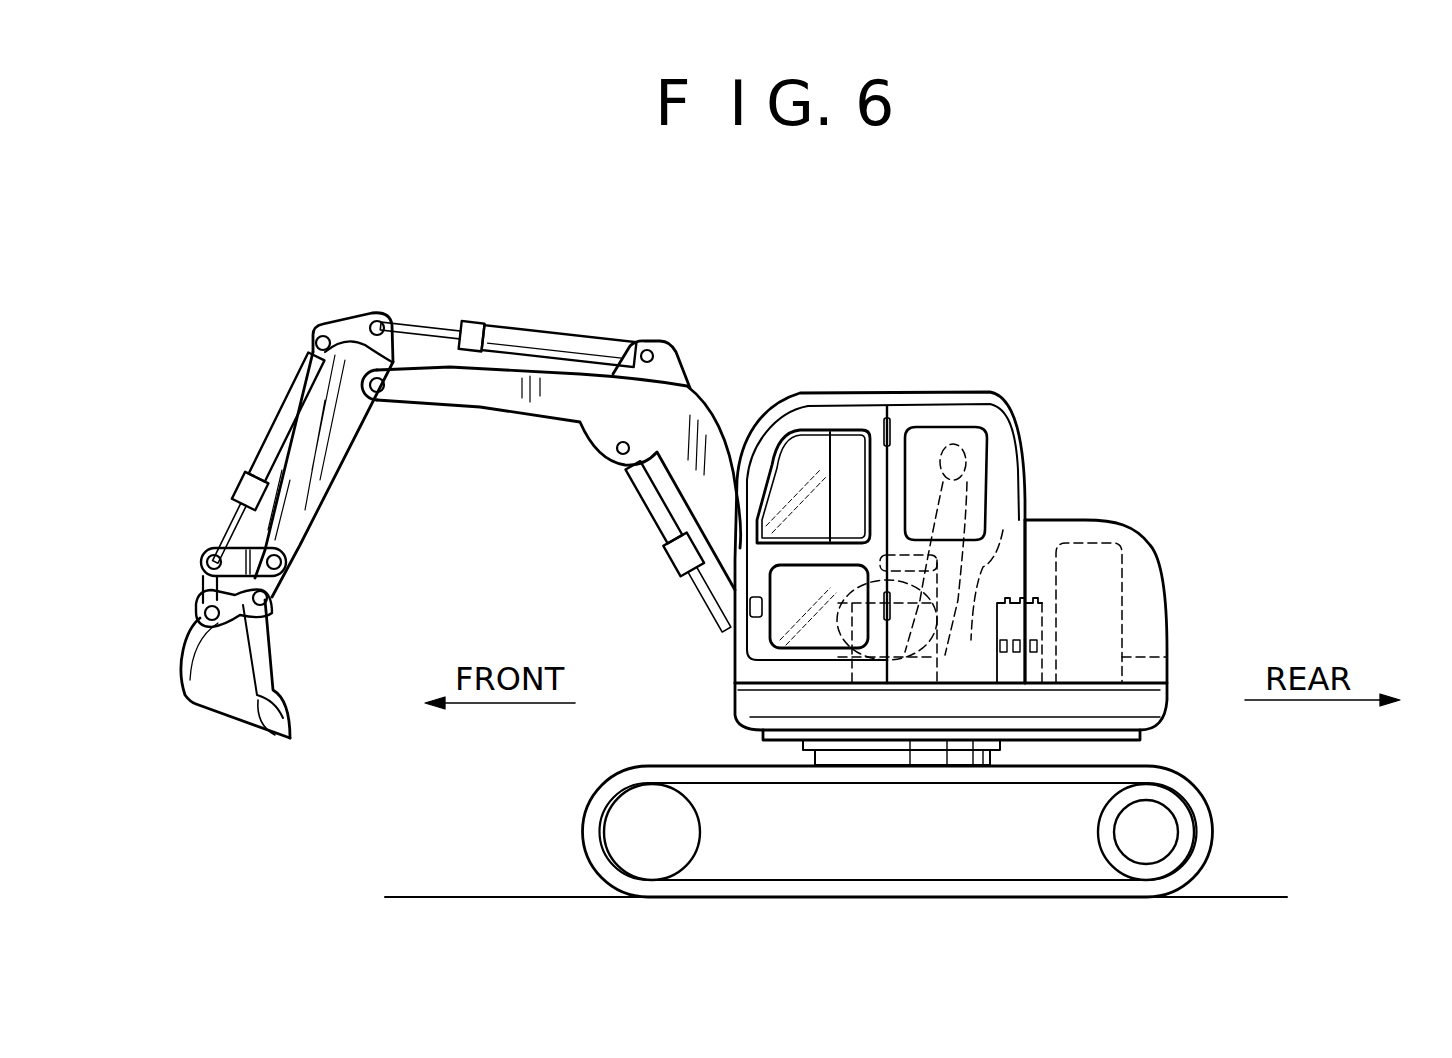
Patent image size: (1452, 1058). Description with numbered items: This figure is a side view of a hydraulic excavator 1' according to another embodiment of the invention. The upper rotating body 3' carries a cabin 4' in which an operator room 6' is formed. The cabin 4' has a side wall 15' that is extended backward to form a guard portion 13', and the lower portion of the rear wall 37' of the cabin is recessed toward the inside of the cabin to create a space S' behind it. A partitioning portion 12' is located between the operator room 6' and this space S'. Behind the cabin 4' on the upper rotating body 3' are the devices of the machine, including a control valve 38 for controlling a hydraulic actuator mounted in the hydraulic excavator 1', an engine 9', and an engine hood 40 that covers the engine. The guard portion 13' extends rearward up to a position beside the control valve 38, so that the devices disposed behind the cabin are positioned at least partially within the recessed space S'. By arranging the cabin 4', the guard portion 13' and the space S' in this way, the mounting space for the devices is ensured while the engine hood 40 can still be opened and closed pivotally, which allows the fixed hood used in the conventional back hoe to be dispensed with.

The hydraulic excavator 1' is at (903, 639).
The upper rotating body 3' is at (996, 630).
The cabin 4' is at (880, 488).
The operator room 6' is at (946, 432).
The engine 9' is at (1171, 649).
The partitioning portion 12' is at (1002, 498).
The guard portion 13' is at (923, 738).
The side wall 15' is at (896, 714).
The rear wall 37' is at (1052, 552).
The space S' is at (987, 563).
The control valve 38 is at (1040, 603).
The engine hood 40 is at (1148, 553).